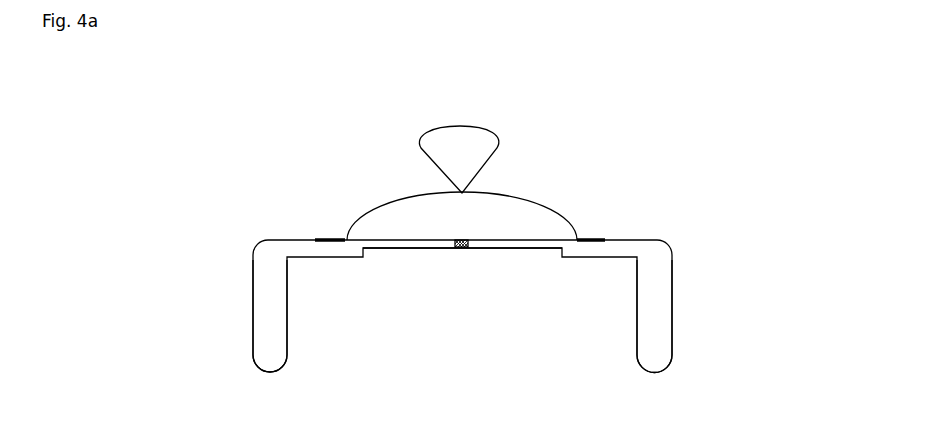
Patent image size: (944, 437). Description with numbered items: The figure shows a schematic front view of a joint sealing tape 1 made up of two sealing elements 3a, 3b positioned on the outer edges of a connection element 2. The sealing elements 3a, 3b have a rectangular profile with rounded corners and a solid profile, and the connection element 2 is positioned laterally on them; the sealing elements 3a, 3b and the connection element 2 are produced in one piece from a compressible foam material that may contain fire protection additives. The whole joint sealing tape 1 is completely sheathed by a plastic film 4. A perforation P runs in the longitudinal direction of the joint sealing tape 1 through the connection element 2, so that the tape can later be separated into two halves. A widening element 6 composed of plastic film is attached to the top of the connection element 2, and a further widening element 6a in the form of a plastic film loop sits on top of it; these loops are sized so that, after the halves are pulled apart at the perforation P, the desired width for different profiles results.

The joint sealing tape 1 is at (340, 200).
The connection element 2 is at (525, 245).
The sealing element 3a is at (268, 305).
The sealing element 3b is at (663, 305).
The plastic film 4 is at (637, 238).
The widening element 6 is at (497, 195).
The further widening element 6a is at (440, 130).
The perforation P is at (462, 247).